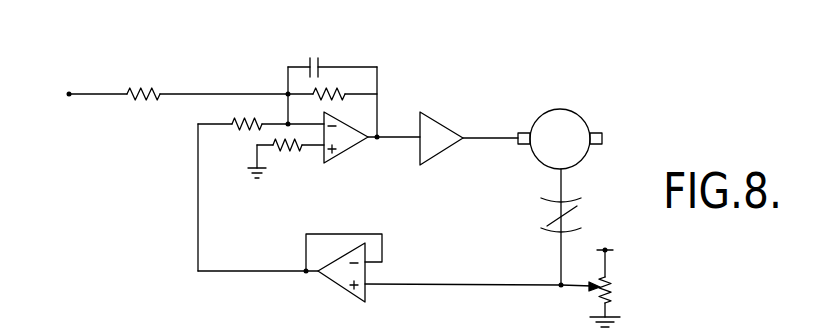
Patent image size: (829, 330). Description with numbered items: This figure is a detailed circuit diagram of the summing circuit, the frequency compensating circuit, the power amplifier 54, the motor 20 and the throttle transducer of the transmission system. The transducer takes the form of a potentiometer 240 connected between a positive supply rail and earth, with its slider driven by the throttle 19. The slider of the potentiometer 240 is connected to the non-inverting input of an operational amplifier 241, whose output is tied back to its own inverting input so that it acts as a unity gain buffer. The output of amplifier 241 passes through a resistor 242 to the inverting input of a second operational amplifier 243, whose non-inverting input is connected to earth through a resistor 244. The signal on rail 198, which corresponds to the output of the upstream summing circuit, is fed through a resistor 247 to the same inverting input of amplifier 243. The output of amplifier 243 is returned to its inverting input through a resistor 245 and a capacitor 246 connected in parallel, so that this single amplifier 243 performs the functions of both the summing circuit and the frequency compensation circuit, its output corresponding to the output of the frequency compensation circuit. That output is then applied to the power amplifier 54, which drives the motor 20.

The rail 198 is at (95, 96).
The resistor 247 is at (147, 92).
The capacitor 246 is at (308, 66).
The resistor 245 is at (340, 92).
The resistor 242 is at (238, 117).
The resistor 244 is at (283, 150).
The operational amplifier 243 is at (343, 142).
The power amplifier 54 is at (440, 143).
The motor 20 is at (548, 130).
The throttle 19 is at (557, 217).
The potentiometer 240 is at (610, 288).
The operational amplifier 241 is at (335, 280).